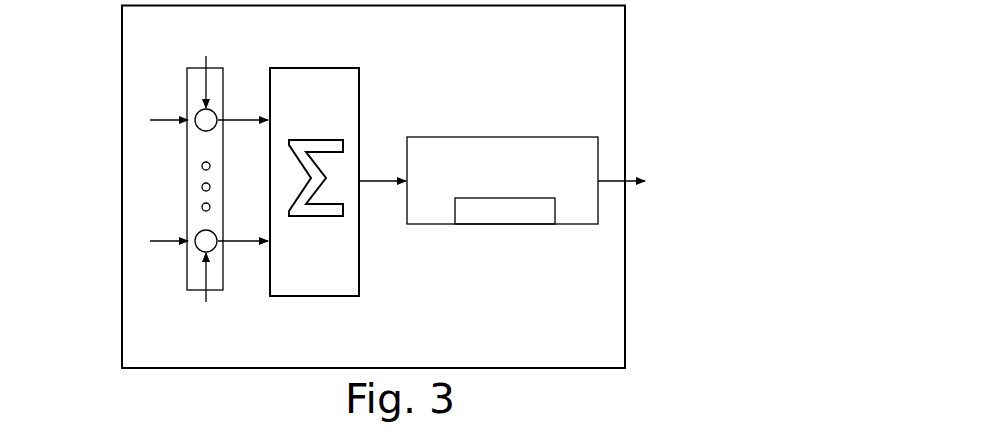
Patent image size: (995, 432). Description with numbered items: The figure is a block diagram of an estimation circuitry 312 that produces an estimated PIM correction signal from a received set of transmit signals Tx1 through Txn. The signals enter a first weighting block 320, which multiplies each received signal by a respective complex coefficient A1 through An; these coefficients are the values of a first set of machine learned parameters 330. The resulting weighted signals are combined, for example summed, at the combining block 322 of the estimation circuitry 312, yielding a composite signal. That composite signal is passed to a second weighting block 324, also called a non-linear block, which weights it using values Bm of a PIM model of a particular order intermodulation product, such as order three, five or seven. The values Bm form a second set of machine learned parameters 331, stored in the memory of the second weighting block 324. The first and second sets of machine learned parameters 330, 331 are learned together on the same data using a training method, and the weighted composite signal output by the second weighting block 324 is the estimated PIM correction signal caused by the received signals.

The estimation circuitry 312 is at (662, 52).
The first weighting block 320 is at (211, 68).
The combining block 322 is at (302, 68).
The second weighting block 324 is at (525, 137).
The first set of machine learned parameters 330 is at (165, 40).
The second set of machine learned parameters 331 is at (602, 278).